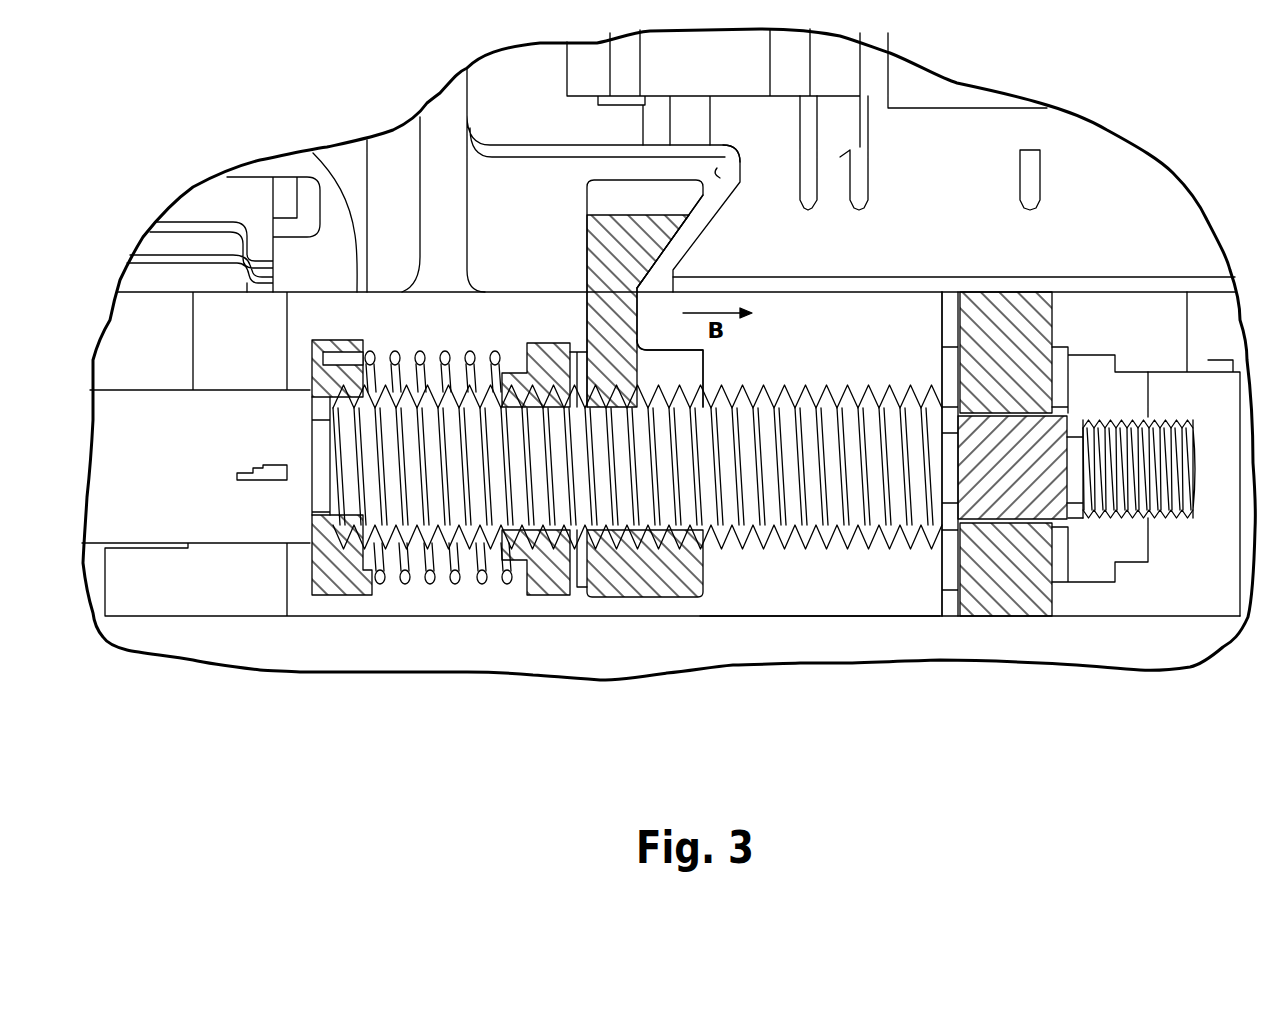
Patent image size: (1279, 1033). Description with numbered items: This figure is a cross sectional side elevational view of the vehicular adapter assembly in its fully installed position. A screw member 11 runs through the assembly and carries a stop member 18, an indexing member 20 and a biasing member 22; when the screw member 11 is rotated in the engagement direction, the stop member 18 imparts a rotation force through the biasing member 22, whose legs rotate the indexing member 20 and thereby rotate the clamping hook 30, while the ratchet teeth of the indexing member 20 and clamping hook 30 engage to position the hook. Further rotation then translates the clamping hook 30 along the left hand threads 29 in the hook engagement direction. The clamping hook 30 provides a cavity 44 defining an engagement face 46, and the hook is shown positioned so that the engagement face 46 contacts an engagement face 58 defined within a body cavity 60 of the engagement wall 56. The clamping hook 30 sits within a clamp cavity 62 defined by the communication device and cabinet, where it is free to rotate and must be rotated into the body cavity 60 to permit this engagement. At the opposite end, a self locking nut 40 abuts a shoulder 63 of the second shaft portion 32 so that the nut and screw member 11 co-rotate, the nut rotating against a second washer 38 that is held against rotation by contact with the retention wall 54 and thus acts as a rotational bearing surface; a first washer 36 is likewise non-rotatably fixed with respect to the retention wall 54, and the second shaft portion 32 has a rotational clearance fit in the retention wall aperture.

The screw member 11 is at (958, 473).
The stop member 18 is at (353, 590).
The indexing member 20 is at (547, 598).
The biasing member 22 is at (445, 357).
The left hand threads 29 is at (813, 383).
The clamping hook 30 is at (603, 257).
The second shaft portion 32 is at (1001, 482).
The first washer 36 is at (945, 555).
The second washer 38 is at (1056, 572).
The self locking nut 40 is at (1085, 562).
The cavity 44 is at (648, 321).
The engagement face 46 is at (683, 242).
The retention wall 54 is at (993, 577).
The engagement wall 56 is at (867, 256).
The engagement face 58 is at (722, 207).
The body cavity 60 is at (722, 174).
The clamp cavity 62 is at (748, 602).
The shoulder 63 is at (1072, 518).